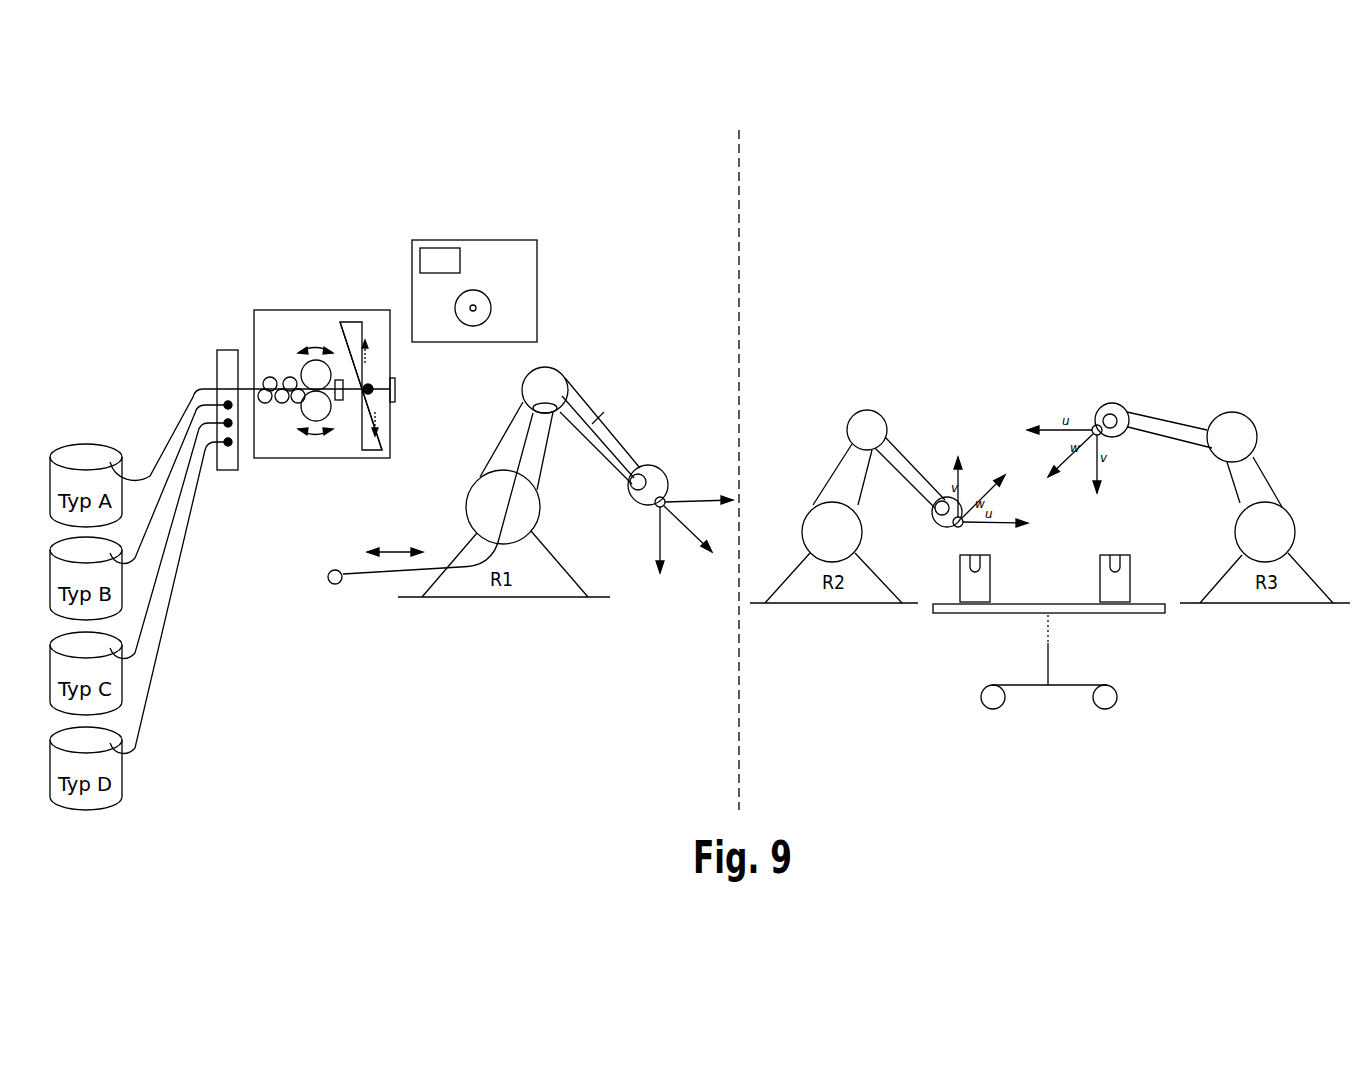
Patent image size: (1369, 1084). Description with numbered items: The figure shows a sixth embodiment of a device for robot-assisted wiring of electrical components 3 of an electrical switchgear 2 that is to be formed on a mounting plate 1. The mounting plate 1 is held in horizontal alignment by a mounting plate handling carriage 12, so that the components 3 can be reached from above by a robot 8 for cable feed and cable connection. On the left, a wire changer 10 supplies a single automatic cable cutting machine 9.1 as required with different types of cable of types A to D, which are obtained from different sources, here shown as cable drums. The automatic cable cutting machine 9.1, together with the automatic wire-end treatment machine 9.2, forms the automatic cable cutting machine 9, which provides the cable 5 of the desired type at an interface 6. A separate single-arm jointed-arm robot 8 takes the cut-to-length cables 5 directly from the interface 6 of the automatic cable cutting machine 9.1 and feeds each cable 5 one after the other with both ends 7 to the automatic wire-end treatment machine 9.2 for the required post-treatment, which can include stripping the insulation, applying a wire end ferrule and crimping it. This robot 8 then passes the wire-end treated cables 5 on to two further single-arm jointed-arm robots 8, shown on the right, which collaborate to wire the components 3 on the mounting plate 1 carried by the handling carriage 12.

The mounting plate 1 is at (1152, 613).
The electrical switchgear 2 is at (1156, 553).
The electrical components 3 is at (975, 580).
The cable 5 is at (112, 462).
The interface 6 is at (395, 390).
The cable ends 7 is at (335, 584).
The single-arm jointed-arm robot 8 is at (547, 387).
The automatic cable cutting machine 9 is at (568, 172).
The automatic cable cutting machine 9.1 is at (315, 328).
The automatic wire-end treatment machine 9.2 is at (508, 257).
The wire changer 10 is at (216, 332).
The mounting plate handling carriage 12 is at (1050, 662).